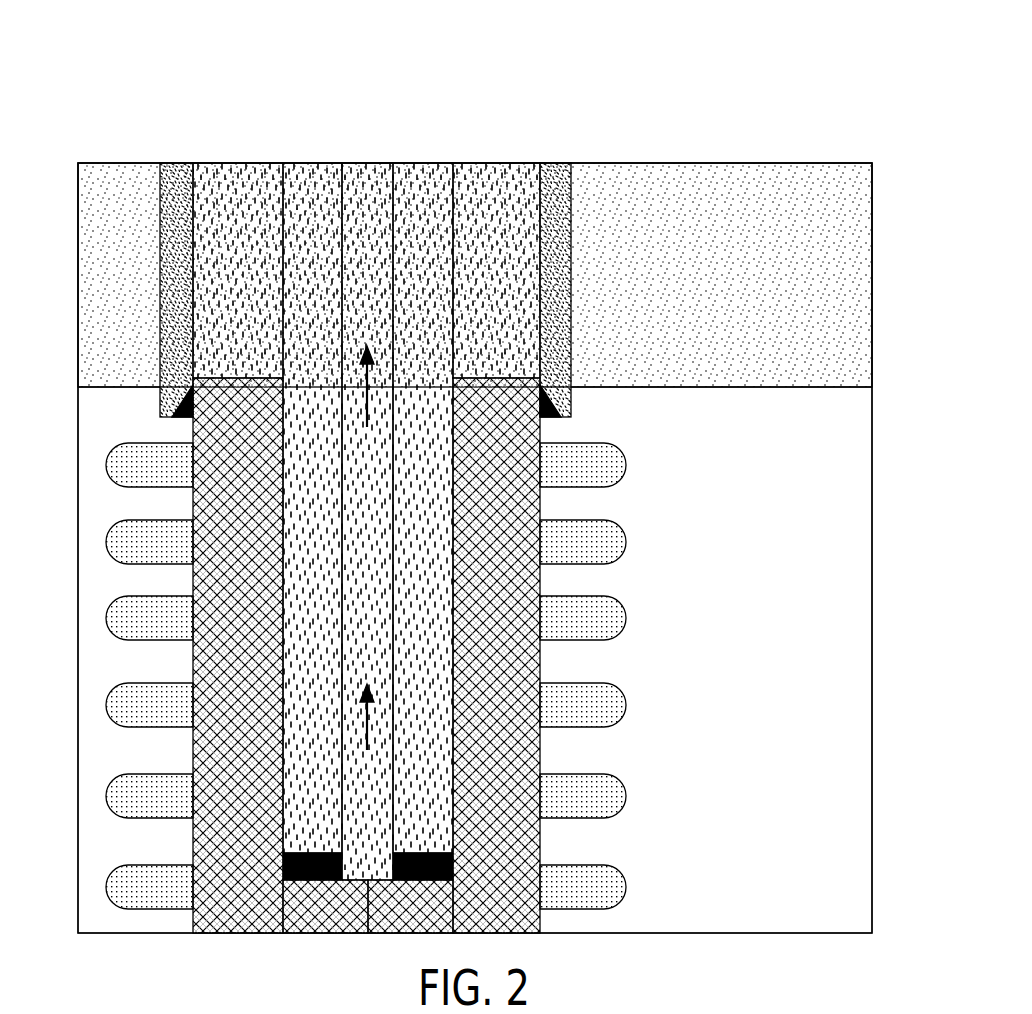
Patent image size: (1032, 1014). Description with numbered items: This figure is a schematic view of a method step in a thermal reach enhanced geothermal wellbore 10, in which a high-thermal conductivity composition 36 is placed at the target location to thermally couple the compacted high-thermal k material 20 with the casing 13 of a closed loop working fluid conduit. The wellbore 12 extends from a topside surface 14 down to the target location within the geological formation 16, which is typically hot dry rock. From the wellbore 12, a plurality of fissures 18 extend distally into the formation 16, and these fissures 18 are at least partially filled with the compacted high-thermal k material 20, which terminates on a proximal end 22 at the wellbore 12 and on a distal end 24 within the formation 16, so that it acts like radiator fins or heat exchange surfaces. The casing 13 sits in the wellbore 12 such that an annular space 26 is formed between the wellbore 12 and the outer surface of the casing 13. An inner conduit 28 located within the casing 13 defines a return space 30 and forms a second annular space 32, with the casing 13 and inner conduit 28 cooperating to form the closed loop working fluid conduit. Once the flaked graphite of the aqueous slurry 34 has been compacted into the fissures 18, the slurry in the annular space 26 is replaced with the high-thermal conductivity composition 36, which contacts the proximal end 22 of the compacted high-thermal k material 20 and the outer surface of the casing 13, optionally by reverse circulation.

The thermal reach enhanced geothermal wellbore 10 is at (606, 89).
The wellbore 12 is at (550, 206).
The casing 13 is at (278, 168).
The topside surface 14 is at (749, 150).
The geological formation 16 is at (852, 565).
The fissures 18 is at (371, 622).
The compacted high-thermal k material 20 is at (123, 470).
The proximal end 22 is at (548, 545).
The distal end 24 is at (626, 676).
The annular space 26 is at (237, 150).
The inner conduit 28 is at (343, 168).
The return space 30 is at (374, 150).
The second annular space 32 is at (320, 145).
The aqueous slurry of flaked graphite 34 is at (205, 492).
The high-thermal conductivity composition 36 is at (520, 730).